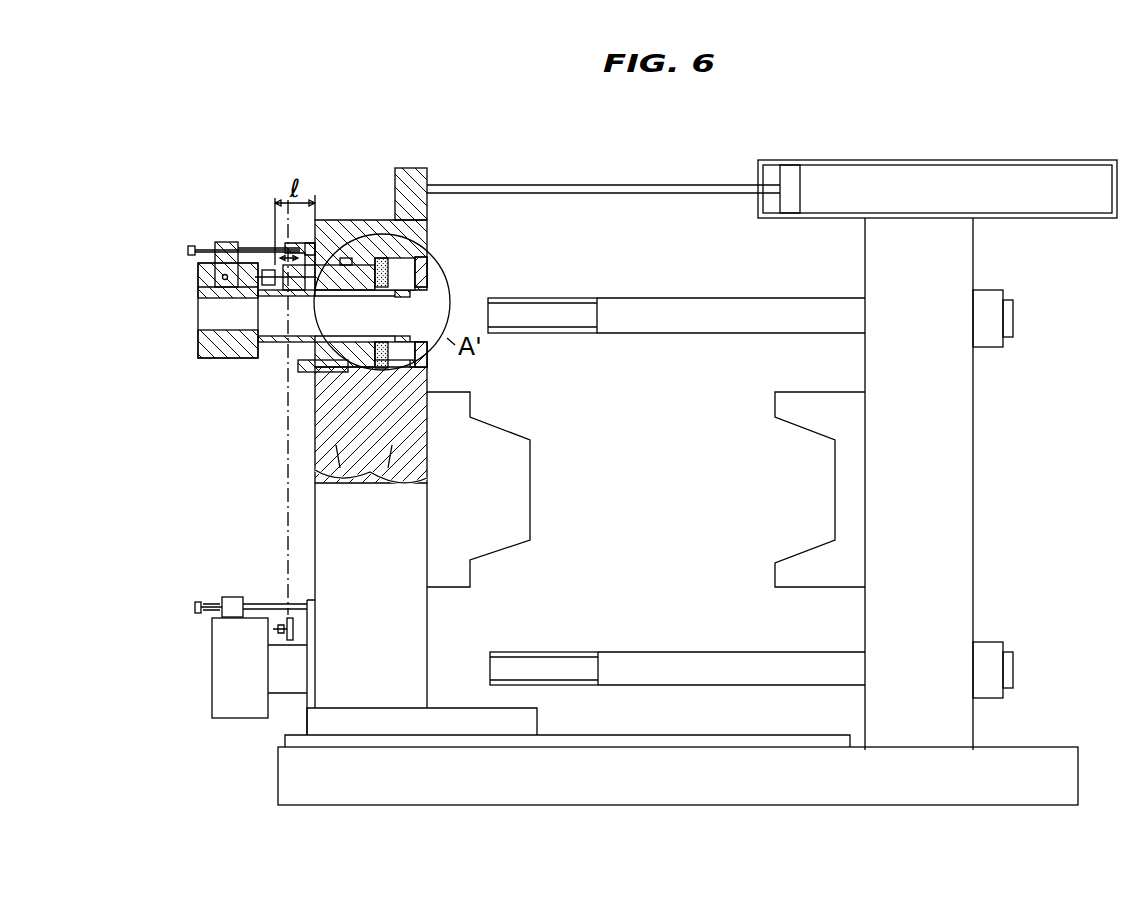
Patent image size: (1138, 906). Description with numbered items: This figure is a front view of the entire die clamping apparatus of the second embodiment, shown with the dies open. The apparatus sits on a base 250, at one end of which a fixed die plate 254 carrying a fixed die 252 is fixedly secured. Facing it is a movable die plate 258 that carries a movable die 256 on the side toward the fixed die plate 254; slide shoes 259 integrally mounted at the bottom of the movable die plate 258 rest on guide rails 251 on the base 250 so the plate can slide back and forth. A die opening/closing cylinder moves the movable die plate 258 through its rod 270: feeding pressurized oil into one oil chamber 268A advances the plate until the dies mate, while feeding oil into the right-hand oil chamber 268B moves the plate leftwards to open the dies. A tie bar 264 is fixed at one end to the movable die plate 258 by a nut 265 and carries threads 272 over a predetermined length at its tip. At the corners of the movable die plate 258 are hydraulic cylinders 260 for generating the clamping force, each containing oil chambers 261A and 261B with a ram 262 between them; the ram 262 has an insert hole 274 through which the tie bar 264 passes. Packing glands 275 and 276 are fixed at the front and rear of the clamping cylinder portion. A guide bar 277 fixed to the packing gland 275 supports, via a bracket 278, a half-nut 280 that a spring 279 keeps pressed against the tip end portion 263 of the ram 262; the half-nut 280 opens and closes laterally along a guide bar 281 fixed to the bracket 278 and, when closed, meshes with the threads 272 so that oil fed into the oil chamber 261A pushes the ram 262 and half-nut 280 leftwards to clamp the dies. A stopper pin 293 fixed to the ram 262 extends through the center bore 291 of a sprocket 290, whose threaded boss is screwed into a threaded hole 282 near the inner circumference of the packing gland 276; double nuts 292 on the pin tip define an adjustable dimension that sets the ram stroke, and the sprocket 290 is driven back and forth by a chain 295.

The base 250 is at (1078, 757).
The guide rails 251 is at (775, 735).
The fixed die 252 is at (838, 472).
The fixed die plate 254 is at (865, 628).
The movable die 256 is at (530, 470).
The movable die plate 258 is at (427, 625).
The slide shoes 259 is at (537, 712).
The hydraulic cylinder 260 is at (343, 478).
The oil chamber 261A is at (400, 440).
The oil chamber 261B is at (333, 440).
The ram 262 is at (337, 352).
The tip end portion 263 is at (265, 342).
The tie bar 264 is at (690, 298).
The nut 265 is at (990, 290).
The oil chamber 268A is at (778, 170).
The oil chamber 268B is at (918, 165).
The rod 270 is at (542, 185).
The threads 272 is at (560, 298).
The insert hole 274 is at (423, 287).
The packing gland 275 is at (303, 375).
The packing gland 276 is at (420, 367).
The guide bar 277 is at (190, 246).
The bracket 278 is at (215, 255).
The spring 279 is at (205, 250).
The half-nut 280 is at (215, 355).
The guide bar 281 is at (222, 277).
The threaded hole 282 is at (325, 290).
The sprocket 290 is at (322, 255).
The center bore 291 is at (295, 290).
The double nuts 292 is at (267, 270).
The stopper pin 293 is at (342, 258).
The chain 295 is at (288, 540).